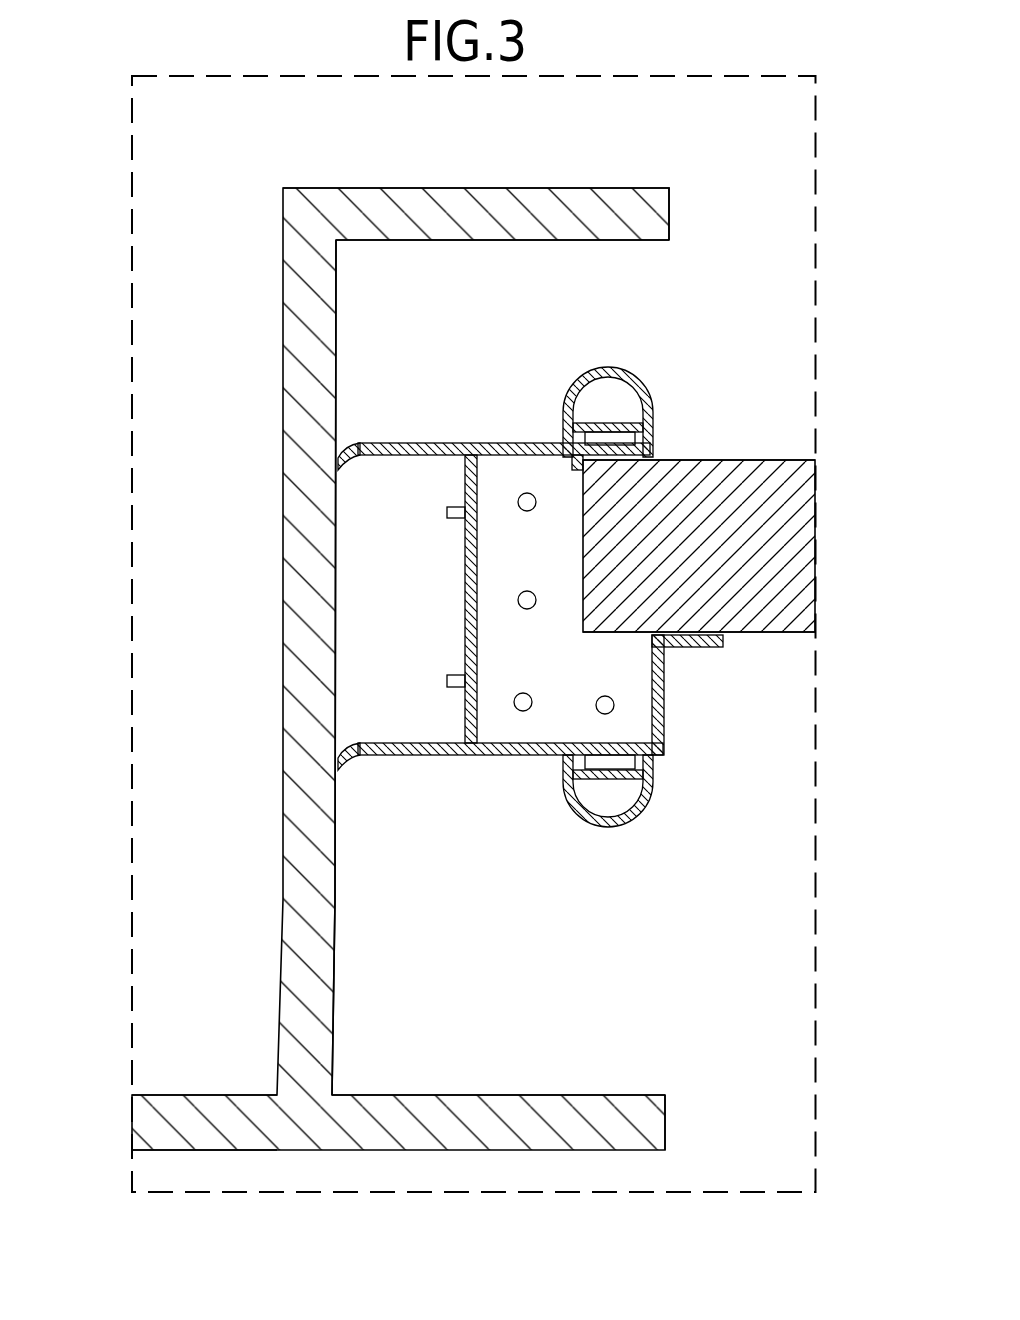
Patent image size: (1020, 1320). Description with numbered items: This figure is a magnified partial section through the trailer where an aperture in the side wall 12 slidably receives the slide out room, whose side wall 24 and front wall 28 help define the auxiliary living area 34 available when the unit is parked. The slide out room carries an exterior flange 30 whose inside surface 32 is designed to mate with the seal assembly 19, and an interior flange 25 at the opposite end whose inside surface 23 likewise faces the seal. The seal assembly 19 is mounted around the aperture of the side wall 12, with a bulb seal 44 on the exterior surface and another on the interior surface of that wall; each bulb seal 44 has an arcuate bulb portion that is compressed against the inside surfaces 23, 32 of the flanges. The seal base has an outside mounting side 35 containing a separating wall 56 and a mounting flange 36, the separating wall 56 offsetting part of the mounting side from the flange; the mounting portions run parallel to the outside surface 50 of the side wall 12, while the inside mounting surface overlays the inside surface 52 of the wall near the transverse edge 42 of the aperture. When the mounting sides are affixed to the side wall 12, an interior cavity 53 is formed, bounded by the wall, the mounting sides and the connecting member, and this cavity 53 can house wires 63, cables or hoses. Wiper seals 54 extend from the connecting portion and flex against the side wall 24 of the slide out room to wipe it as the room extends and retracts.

The side wall 12 is at (706, 460).
The seal assembly 19 is at (542, 641).
The inside surface 23 is at (491, 244).
The side wall of slide out room 24 is at (293, 585).
The interior flange 25 is at (658, 226).
The front wall 28 is at (185, 1110).
The exterior flange 30 is at (662, 1122).
The inside surface 32 is at (462, 1095).
The auxiliary living area 34 is at (226, 904).
The outside mounting side 35 is at (518, 758).
The mounting flange 36 is at (692, 648).
The transverse edge 42 is at (583, 553).
The bulb seal 44 is at (626, 362).
The outside surface 50 is at (776, 634).
The inside surface 52 is at (776, 460).
The interior cavity 53 is at (538, 577).
The wiper seal 54 is at (392, 452).
The separating wall 56 is at (665, 750).
The wires 63 is at (596, 701).